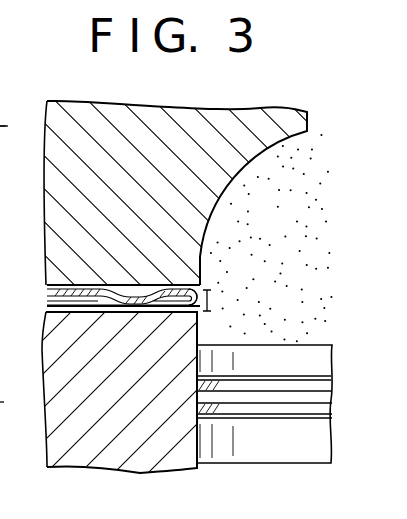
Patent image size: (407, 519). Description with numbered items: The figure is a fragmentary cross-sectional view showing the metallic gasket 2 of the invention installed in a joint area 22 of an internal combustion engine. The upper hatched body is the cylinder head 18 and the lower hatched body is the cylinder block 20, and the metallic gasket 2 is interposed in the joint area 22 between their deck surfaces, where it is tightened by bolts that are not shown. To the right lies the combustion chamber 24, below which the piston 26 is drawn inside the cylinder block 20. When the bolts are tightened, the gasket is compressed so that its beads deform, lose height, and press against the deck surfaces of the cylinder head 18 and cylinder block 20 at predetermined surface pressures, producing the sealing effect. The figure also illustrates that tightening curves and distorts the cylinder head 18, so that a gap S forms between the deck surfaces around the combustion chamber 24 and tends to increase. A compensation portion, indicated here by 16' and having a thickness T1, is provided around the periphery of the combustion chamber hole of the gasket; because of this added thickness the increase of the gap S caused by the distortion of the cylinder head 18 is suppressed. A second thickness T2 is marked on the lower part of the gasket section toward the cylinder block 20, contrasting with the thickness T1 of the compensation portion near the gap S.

The cylinder head 18 is at (92, 120).
The cylinder block 20 is at (108, 437).
The joint area 22 is at (42, 285).
The metallic gasket 2 is at (184, 283).
The gap S is at (210, 299).
The combustion chamber 24 is at (293, 210).
The piston 26 is at (272, 437).
The parting plane 16' is at (14, 109).
The thickness of compensation portion T1 is at (5, 171).
The thickness T2 is at (10, 413).